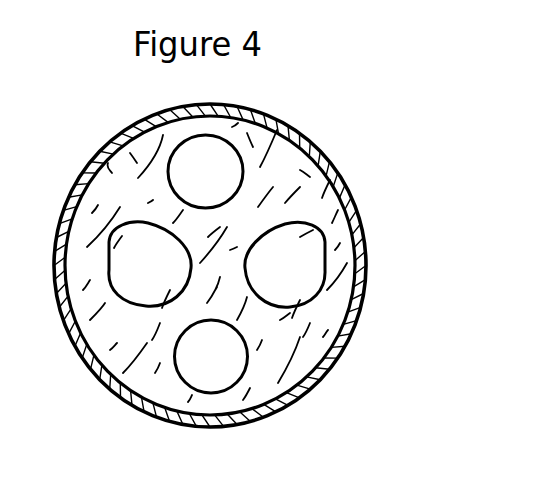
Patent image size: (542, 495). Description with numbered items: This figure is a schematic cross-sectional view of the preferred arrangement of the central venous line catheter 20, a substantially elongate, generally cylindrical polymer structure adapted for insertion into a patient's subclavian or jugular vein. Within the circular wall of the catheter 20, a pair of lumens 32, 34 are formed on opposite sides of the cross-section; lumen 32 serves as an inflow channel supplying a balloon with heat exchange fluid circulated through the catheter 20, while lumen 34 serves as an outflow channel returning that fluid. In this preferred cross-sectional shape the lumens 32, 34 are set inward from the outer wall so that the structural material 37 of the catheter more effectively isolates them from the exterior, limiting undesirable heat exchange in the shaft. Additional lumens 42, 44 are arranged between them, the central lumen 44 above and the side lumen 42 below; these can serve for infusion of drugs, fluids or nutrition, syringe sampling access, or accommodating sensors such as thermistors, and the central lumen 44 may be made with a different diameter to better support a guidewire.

The central venous line catheter 20 is at (277, 112).
The lumen 32 is at (122, 255).
The lumen 34 is at (300, 235).
The structural material 37 is at (263, 385).
The lumen 42 is at (210, 392).
The central lumen 44 is at (185, 143).